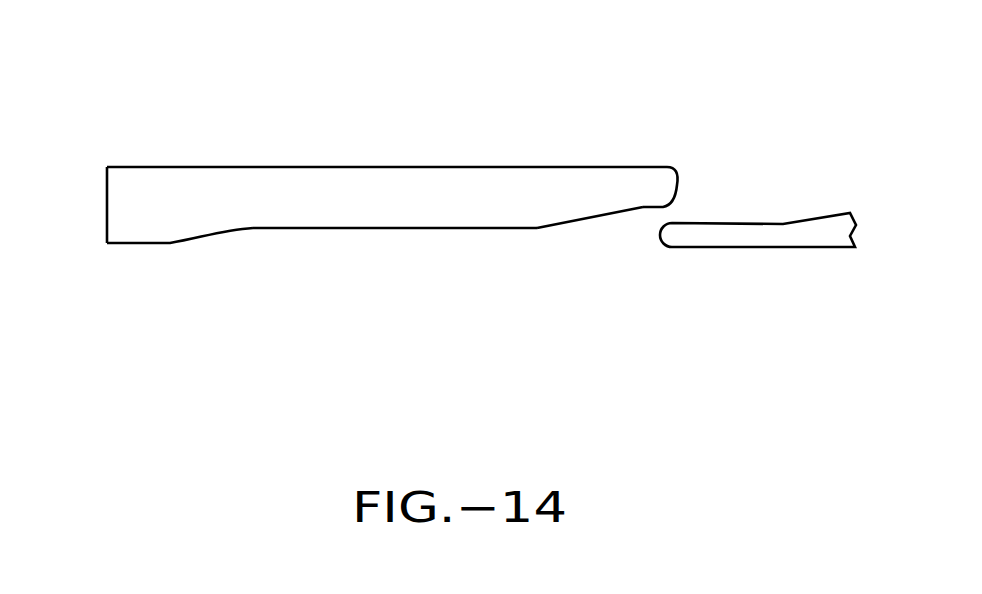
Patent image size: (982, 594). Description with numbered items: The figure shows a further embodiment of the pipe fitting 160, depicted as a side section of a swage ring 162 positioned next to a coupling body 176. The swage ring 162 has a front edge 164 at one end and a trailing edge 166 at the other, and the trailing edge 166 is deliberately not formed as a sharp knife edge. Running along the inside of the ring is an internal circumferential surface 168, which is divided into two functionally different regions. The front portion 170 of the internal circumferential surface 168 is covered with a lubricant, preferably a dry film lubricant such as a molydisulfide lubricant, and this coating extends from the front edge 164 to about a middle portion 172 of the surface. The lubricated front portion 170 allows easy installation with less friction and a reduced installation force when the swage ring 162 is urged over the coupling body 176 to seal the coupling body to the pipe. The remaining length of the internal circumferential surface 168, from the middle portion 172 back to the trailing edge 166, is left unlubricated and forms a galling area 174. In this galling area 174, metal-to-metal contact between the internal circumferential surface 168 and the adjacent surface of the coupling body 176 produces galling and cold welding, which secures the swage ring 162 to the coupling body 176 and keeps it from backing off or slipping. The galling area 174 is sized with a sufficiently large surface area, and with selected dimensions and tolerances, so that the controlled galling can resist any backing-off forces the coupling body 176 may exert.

The pipe fitting 160 is at (397, 95).
The swage ring 162 is at (220, 167).
The front edge 164 is at (668, 167).
The trailing edge 166 is at (107, 208).
The internal circumferential surface 168 is at (318, 229).
The front portion 170 is at (508, 268).
The middle portion 172 is at (370, 229).
The galling area 174 is at (251, 278).
The coupling body 176 is at (808, 220).